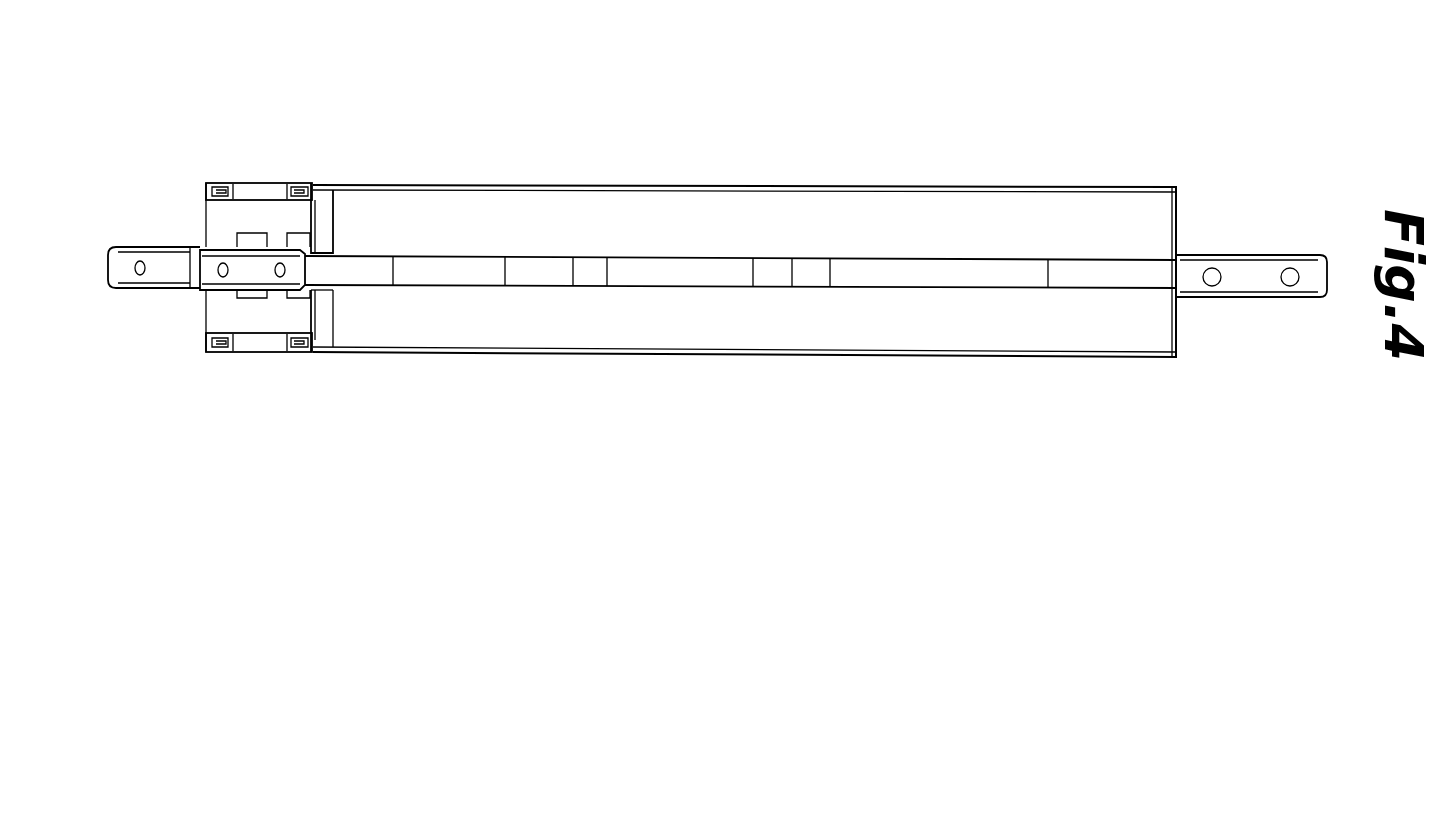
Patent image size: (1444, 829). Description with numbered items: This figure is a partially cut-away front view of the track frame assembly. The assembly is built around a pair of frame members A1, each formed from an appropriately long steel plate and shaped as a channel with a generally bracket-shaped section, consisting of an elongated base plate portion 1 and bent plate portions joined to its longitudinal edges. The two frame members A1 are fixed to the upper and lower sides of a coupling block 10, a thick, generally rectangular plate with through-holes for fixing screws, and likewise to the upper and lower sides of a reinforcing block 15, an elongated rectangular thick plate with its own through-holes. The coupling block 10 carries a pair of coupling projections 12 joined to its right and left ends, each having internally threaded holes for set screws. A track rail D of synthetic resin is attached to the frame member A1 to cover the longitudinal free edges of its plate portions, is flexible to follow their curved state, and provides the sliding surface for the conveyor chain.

The base plate portion 1 is at (965, 238).
The frame member A1 is at (217, 220).
The track rail D is at (243, 184).
The coupling block 10 is at (333, 270).
The reinforcing block 15 is at (580, 268).
The coupling projection 12 is at (152, 255).